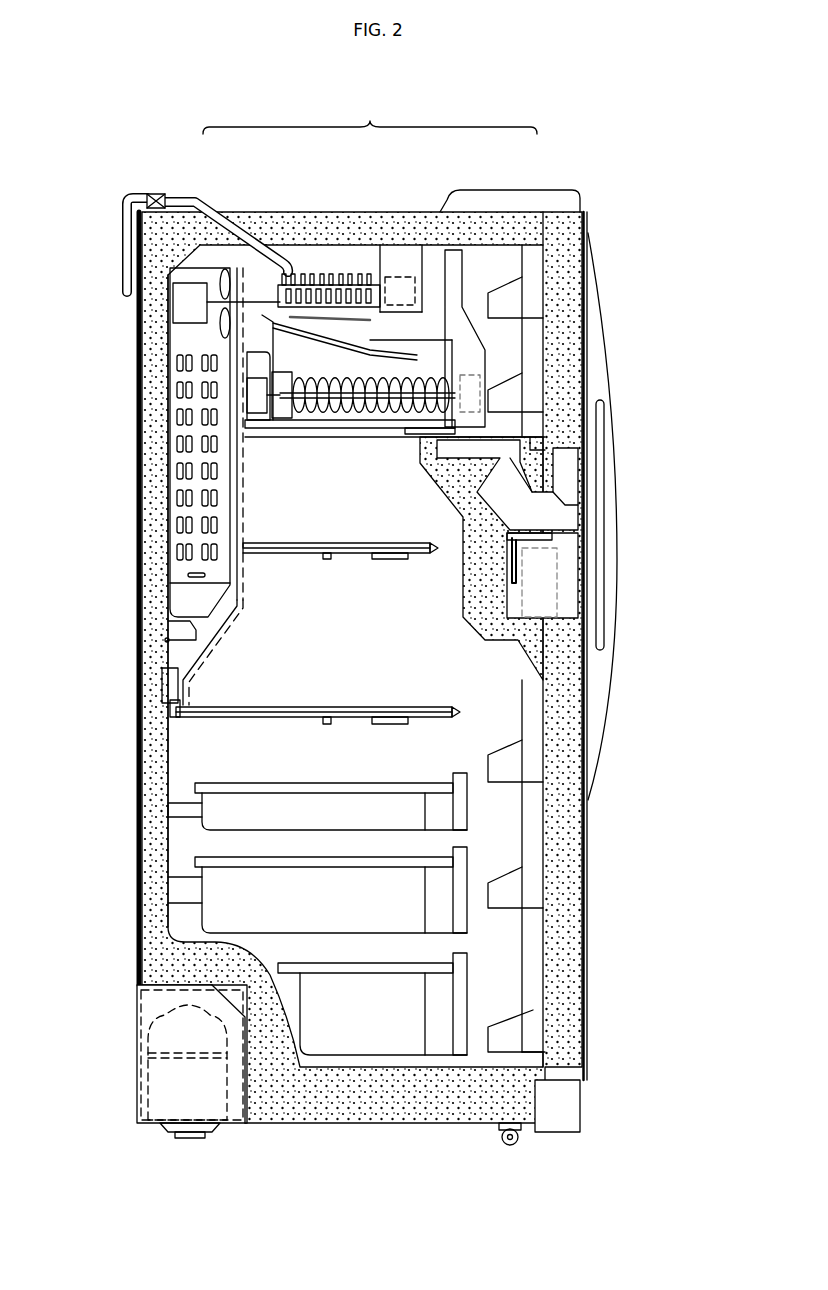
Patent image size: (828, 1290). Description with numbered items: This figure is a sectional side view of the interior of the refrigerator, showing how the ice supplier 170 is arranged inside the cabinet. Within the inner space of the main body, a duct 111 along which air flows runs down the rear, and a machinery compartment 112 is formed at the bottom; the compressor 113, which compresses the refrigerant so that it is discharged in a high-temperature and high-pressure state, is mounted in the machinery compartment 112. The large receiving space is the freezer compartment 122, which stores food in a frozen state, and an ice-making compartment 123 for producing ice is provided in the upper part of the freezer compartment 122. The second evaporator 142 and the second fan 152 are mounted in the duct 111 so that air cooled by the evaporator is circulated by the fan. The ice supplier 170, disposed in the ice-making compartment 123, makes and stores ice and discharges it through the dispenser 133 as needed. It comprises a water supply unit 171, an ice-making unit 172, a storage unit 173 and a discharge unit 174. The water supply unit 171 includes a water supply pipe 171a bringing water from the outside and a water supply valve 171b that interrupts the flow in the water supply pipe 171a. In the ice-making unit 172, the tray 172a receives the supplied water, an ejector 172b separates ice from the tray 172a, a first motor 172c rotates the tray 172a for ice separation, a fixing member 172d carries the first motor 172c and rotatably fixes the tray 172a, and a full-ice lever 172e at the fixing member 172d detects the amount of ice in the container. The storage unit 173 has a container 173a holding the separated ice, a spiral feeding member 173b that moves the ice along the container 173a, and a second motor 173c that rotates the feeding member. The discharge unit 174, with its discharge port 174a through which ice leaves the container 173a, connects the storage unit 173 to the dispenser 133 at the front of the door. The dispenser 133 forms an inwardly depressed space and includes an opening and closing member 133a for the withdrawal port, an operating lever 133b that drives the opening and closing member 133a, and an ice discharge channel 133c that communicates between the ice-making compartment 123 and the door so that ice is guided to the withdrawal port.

The duct 111 is at (186, 266).
The machinery compartment 112 is at (150, 993).
The compressor 113 is at (160, 1077).
The freezer compartment 122 is at (339, 645).
The ice-making compartment 123 is at (345, 340).
The dispenser 133 is at (606, 573).
The opening and closing member 133a is at (540, 537).
The operating lever 133b is at (520, 573).
The ice discharge channel 133c is at (487, 470).
The second evaporator 142 is at (245, 400).
The second fan 152 is at (173, 362).
The ice supplier 170 is at (370, 114).
The water supply unit 171 is at (246, 212).
The water supply pipe 171a is at (120, 227).
The water supply valve 171b is at (156, 193).
The ice-making unit 172 is at (345, 258).
The tray 172a is at (173, 305).
The ejector 172b is at (400, 303).
The first motor 172c is at (388, 402).
The fixing member 172d is at (410, 422).
The full-ice lever 172e is at (298, 407).
The storage unit 173 is at (336, 360).
The container 173a is at (349, 420).
The spiral feeding member 173b is at (305, 402).
The second motor 173c is at (258, 398).
The discharge unit 174 is at (482, 310).
The discharge port 174a is at (540, 443).